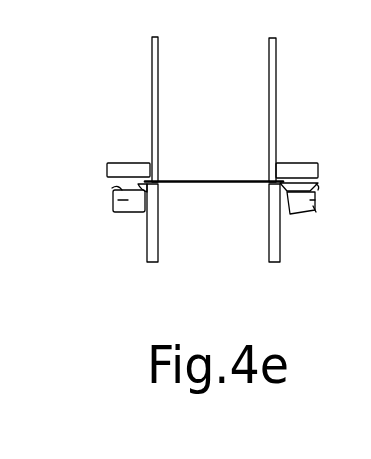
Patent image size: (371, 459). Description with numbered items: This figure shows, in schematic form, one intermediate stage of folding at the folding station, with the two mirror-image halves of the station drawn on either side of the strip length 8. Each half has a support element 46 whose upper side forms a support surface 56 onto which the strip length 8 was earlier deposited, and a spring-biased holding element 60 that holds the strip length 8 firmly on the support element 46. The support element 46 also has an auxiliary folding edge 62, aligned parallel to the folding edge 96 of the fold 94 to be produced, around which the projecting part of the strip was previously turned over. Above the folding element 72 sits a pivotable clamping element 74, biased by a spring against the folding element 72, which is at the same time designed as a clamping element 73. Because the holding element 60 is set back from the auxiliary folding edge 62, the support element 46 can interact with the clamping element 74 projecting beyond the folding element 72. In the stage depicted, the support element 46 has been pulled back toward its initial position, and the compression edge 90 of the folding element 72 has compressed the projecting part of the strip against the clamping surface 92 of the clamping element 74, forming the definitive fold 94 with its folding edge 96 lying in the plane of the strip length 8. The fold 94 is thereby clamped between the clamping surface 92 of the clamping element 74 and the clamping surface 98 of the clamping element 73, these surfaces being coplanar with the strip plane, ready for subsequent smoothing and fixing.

The strip length 8 is at (222, 180).
The support element 46 is at (159, 227).
The support surface 56 is at (269, 190).
The holding element 60 is at (159, 80).
The auxiliary folding edge 62 is at (159, 198).
The folding element 72 is at (113, 199).
The clamping element 73 is at (315, 210).
The clamping element 74 is at (126, 170).
The compression edge 90 is at (140, 190).
The clamping surface 92 is at (115, 189).
The fold 94 is at (289, 163).
The folding edge 96 is at (317, 188).
The clamping surface 98 is at (298, 183).